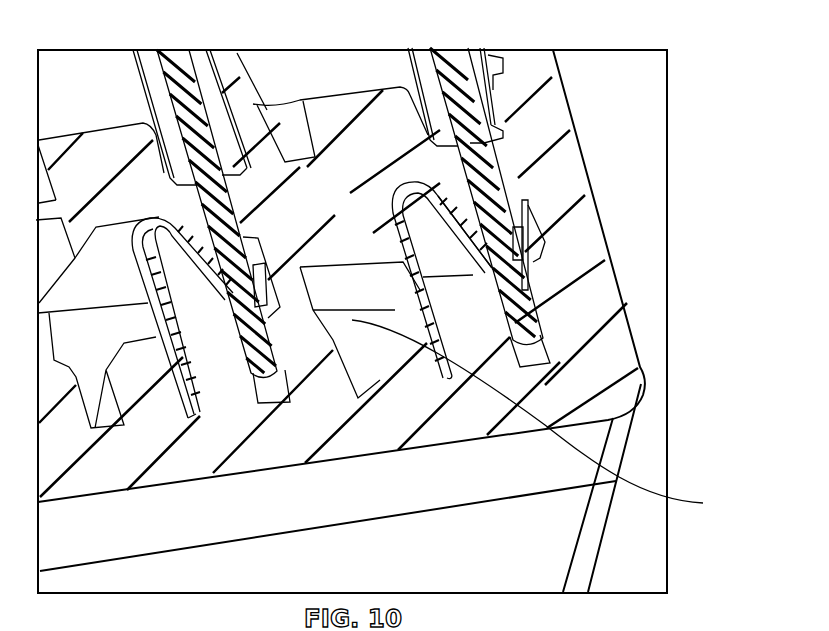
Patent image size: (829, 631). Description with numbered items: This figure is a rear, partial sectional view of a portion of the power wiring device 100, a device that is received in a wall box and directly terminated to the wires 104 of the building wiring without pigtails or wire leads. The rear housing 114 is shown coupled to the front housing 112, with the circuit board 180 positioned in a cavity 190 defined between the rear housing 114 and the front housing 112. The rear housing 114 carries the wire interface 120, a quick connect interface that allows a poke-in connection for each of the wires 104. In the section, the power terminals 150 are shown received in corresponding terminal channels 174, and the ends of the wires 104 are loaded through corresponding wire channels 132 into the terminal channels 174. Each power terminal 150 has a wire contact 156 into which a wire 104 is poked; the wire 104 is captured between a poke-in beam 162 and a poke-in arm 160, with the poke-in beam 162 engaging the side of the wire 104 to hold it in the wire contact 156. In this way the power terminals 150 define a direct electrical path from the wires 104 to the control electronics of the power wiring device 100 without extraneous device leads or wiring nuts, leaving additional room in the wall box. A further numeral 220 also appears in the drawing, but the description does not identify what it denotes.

The power wiring device 100 is at (688, 100).
The wires 104 is at (522, 222).
The front housing 112 is at (595, 517).
The rear housing 114 is at (622, 432).
The wire interface 120 is at (385, 70).
The wire channels 132 is at (502, 114).
The power terminals 150 is at (505, 314).
The wire contacts 156 is at (540, 258).
The poke-in arms 160 is at (433, 270).
The poke-in beams 162 is at (440, 265).
The terminal channels 174 is at (528, 240).
The circuit board 180 is at (551, 419).
The cavity 190 is at (338, 287).
The component 220 is at (206, 624).